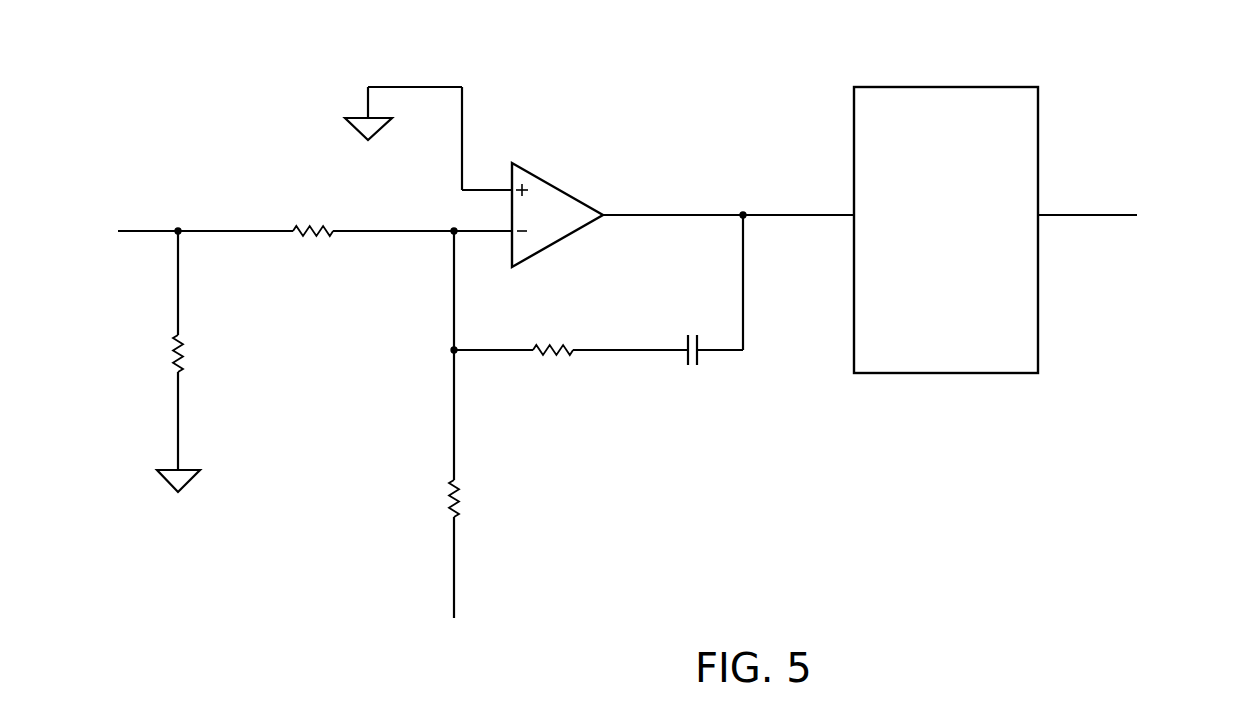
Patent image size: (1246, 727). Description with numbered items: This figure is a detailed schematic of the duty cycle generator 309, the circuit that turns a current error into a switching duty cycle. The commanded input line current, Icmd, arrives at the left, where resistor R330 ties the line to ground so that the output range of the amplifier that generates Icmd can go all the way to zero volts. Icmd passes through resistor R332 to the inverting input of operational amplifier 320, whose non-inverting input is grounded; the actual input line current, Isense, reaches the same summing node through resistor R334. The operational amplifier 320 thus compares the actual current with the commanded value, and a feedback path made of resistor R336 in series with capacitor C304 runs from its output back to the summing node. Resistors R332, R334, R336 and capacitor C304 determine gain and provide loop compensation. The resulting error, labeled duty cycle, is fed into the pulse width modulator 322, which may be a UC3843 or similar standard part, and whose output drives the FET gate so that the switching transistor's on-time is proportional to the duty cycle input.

The duty cycle generator 309 is at (906, 476).
The operational amplifier 320 is at (553, 182).
The pulse width modulator 322 is at (932, 87).
The resistor R330 is at (182, 358).
The resistor R332 is at (308, 240).
The resistor R334 is at (459, 497).
The resistor R336 is at (548, 358).
The capacitor C304 is at (703, 358).